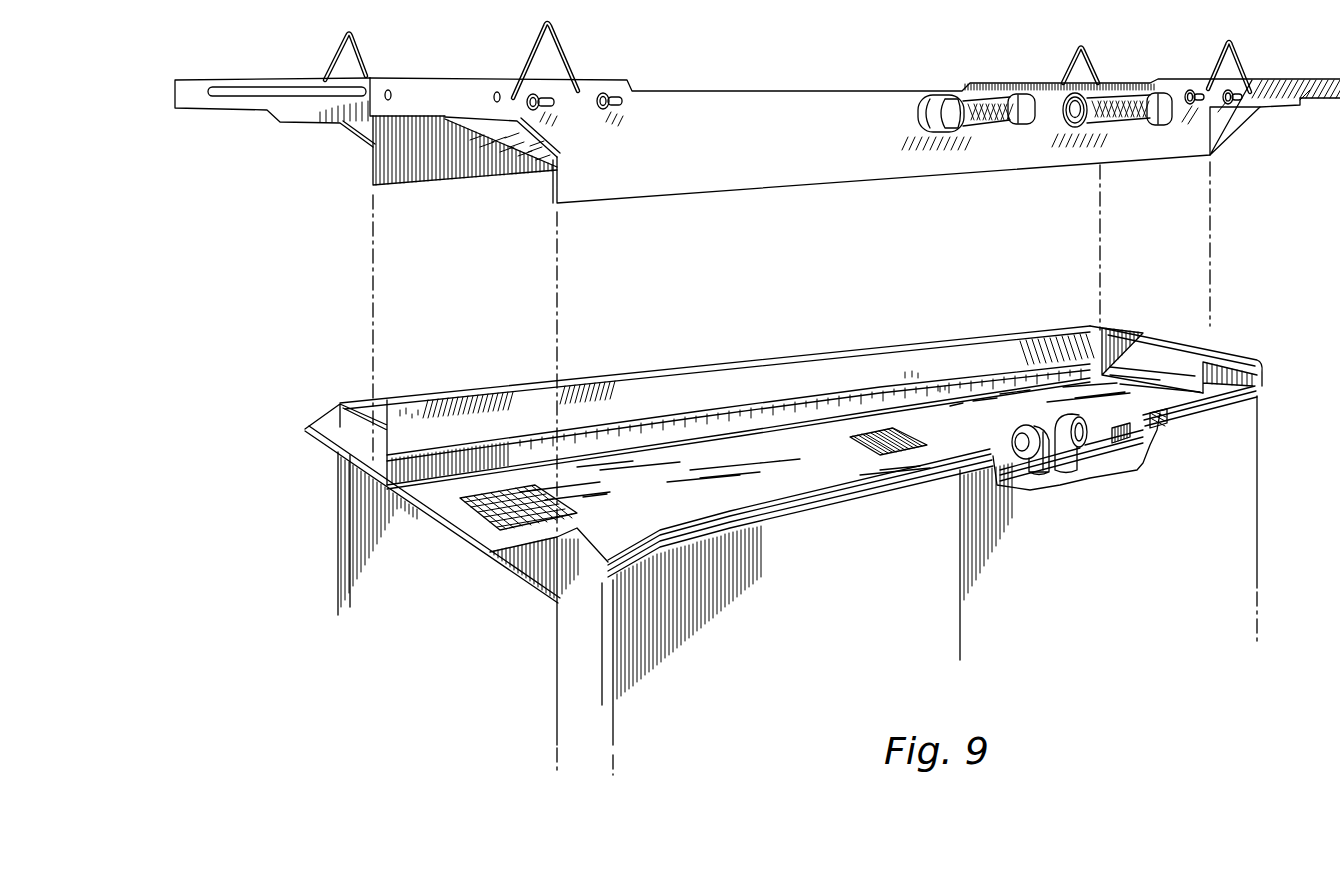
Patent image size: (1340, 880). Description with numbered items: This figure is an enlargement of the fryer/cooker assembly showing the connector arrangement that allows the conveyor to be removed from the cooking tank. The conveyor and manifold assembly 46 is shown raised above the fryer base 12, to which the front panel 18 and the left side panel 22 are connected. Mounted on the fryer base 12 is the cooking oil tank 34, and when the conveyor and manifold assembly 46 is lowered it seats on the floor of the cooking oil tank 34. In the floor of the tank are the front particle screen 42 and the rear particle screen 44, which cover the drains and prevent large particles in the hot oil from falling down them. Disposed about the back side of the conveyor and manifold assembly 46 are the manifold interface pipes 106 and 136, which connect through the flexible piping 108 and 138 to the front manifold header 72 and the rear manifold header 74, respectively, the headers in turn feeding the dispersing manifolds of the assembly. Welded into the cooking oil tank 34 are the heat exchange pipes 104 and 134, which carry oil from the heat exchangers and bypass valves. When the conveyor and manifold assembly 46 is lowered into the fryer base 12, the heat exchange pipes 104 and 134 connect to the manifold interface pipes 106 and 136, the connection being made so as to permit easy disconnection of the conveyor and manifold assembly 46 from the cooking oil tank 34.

The fryer base 12 is at (1238, 455).
The front panel 18 is at (447, 627).
The left side panel 22 is at (815, 648).
The cooking oil tank 34 is at (798, 492).
The front particle screen 42 is at (905, 441).
The rear particle screen 44 is at (576, 510).
The conveyor and manifold assembly 46 is at (720, 88).
The front manifold header 72 is at (1158, 118).
The rear manifold header 74 is at (948, 108).
The heat exchange pipe 104 is at (1068, 455).
The manifold interface pipe 106 is at (1082, 96).
The flexible piping 108 is at (1122, 98).
The heat exchange pipe 134 is at (1040, 470).
The manifold interface pipe 136 is at (1020, 100).
The flexible piping 138 is at (993, 95).